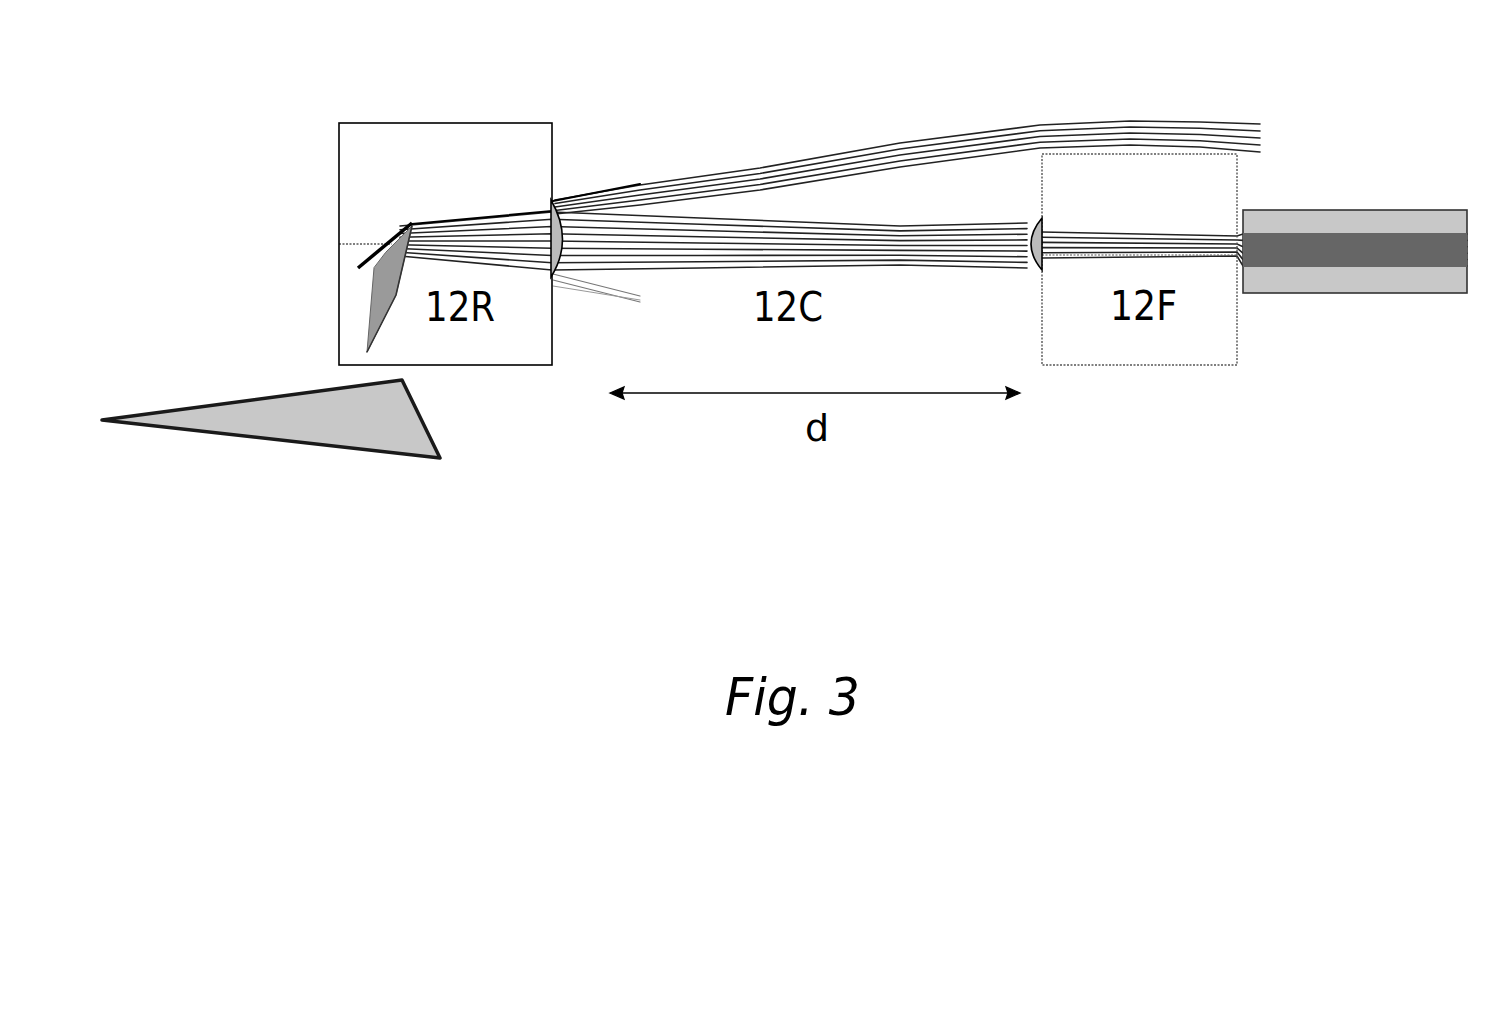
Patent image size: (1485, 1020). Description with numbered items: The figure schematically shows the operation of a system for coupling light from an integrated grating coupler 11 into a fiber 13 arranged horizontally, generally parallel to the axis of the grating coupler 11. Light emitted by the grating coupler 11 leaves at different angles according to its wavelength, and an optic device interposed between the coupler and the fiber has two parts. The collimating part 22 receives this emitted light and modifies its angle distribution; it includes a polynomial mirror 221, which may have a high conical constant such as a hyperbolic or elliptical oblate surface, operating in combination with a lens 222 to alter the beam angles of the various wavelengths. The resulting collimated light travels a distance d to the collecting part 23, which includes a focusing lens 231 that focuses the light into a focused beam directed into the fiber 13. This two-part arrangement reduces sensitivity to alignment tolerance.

The grating coupler 11 is at (275, 432).
The fiber 13 is at (1360, 226).
The collimating part 22 is at (432, 129).
The polynomial mirror 221 is at (388, 241).
The lens 222 is at (562, 203).
The collecting part 23 is at (1133, 128).
The focusing lens 231 is at (1037, 218).